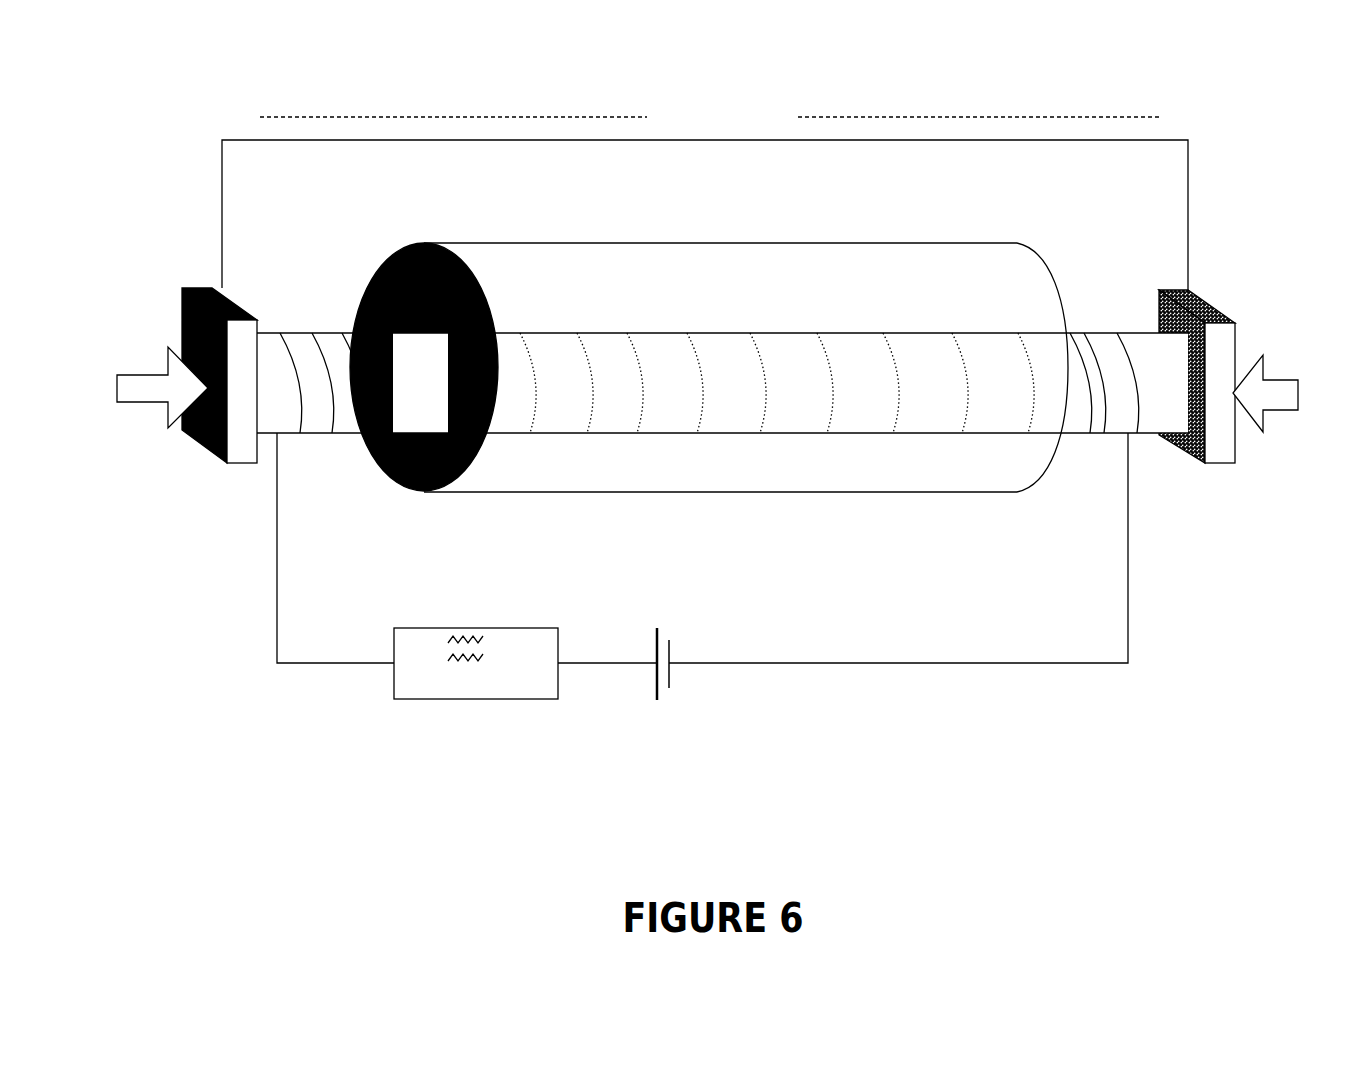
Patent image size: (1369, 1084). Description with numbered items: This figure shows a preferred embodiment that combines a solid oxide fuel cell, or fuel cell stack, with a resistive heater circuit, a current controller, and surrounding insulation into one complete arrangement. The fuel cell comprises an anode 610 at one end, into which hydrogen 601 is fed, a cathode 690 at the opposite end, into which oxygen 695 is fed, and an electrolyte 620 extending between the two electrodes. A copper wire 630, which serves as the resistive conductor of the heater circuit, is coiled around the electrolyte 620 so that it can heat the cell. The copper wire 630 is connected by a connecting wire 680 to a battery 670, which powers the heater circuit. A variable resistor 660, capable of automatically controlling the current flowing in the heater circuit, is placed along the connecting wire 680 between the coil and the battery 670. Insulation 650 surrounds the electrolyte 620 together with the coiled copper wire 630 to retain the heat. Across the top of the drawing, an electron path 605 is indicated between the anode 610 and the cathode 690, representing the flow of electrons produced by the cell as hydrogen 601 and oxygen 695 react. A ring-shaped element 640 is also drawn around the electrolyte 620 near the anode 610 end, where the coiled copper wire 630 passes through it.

The hydrogen 601 is at (148, 390).
The electron flow path 605 is at (755, 102).
The anode 610 is at (210, 435).
The electrolyte 620 is at (275, 423).
The copper wire 630 is at (333, 427).
The magnet ring 640 is at (415, 450).
The insulation 650 is at (582, 463).
The variable resistor 660 is at (466, 680).
The battery 670 is at (670, 706).
The connecting wire 680 is at (1073, 663).
The cathode 690 is at (1220, 423).
The oxygen 695 is at (1285, 392).